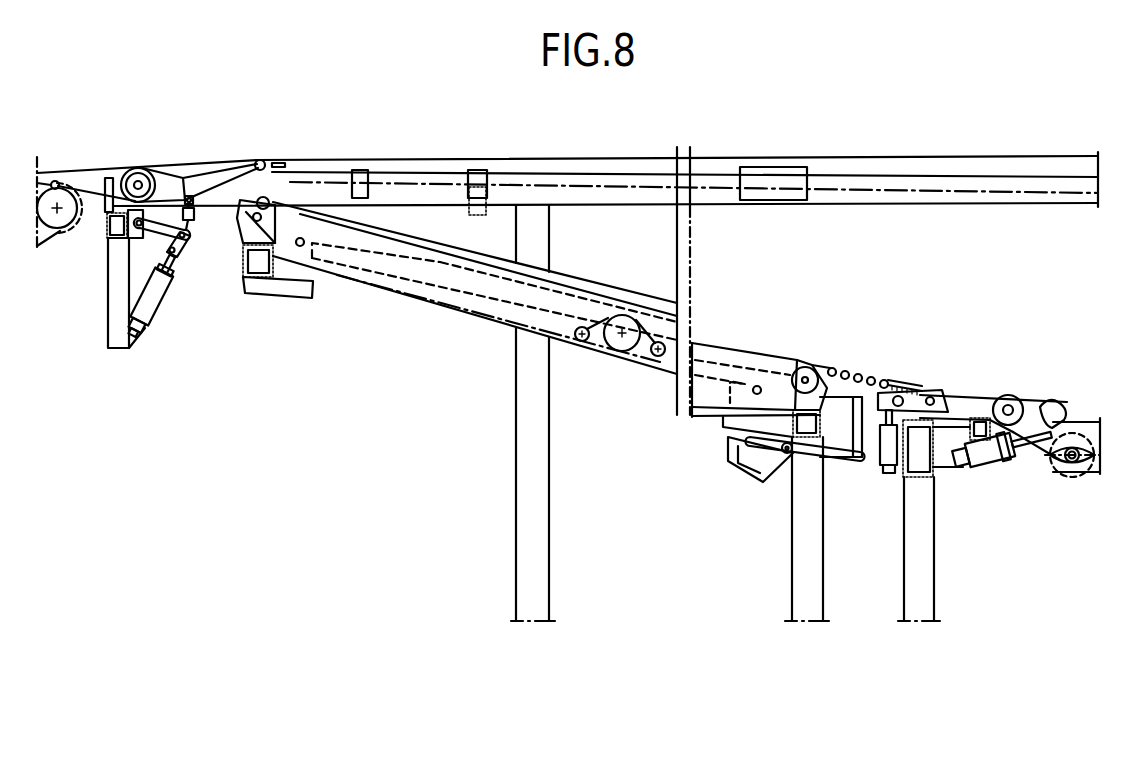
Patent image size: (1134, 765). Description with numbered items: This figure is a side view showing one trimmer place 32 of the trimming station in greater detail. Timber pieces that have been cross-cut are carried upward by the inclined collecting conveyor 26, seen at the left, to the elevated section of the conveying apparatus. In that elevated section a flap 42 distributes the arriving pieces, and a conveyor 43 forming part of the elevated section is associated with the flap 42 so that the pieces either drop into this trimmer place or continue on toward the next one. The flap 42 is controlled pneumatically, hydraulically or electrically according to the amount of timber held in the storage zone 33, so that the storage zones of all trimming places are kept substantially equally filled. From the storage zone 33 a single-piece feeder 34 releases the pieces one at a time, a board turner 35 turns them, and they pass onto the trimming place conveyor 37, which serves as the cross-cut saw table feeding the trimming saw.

The inclined collecting conveyor 26 is at (61, 243).
The trimmer place 32 is at (840, 362).
The storage zone 33 is at (587, 278).
The single-piece feeder 34 is at (920, 397).
The board turner 35 is at (1040, 402).
The trimming place conveyor 37 is at (1087, 422).
The flap 42 is at (203, 195).
The conveyor 43 is at (412, 157).